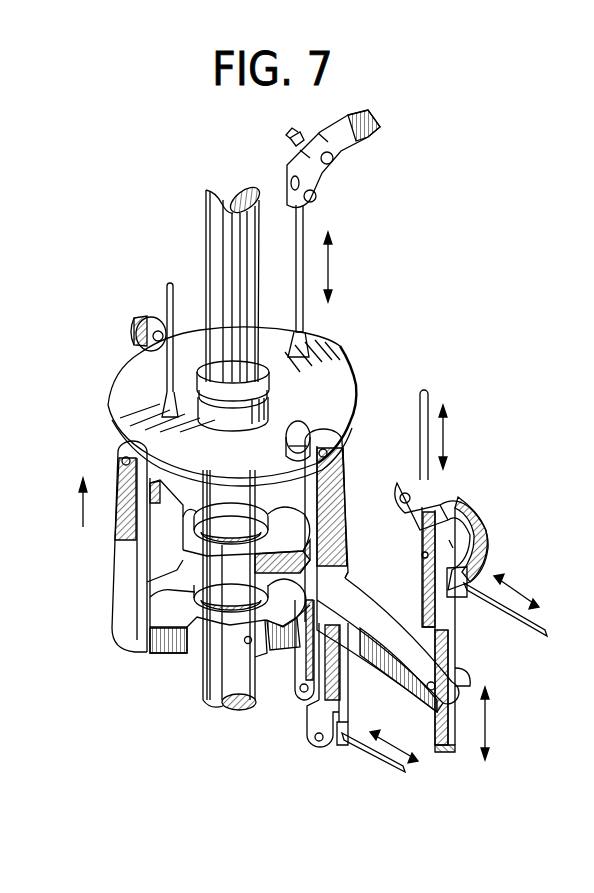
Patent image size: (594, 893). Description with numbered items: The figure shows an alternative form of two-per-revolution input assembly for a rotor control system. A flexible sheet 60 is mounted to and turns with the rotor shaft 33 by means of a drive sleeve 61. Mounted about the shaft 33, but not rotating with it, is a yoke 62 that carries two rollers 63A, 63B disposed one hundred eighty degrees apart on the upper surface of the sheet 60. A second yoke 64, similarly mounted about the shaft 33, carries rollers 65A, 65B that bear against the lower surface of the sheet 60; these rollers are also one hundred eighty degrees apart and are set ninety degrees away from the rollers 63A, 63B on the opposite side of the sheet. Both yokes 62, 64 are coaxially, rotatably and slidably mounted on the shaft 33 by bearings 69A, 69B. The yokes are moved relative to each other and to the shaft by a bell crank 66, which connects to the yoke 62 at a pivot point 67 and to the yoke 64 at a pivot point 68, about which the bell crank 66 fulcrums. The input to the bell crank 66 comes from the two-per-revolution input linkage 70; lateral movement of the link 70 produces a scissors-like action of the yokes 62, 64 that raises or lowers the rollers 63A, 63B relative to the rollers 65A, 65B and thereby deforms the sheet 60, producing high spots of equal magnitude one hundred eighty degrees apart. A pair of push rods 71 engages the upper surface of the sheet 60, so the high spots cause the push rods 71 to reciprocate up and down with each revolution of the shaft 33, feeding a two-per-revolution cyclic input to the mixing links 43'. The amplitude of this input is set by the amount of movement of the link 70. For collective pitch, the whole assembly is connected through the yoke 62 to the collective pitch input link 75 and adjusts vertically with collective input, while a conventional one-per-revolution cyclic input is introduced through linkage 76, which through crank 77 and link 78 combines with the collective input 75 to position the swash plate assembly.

The rotor shaft 33 is at (222, 232).
The mixing link 43' is at (365, 159).
The push rod 71 is at (305, 217).
The roller 63A is at (153, 316).
The flexible sheet 60 is at (335, 378).
The drive sleeve 61 is at (270, 386).
The roller 63B is at (330, 425).
The roller 65A is at (112, 445).
The roller 65B is at (340, 346).
The yoke 64 is at (147, 645).
The yoke 62 is at (216, 560).
The bearing 69A is at (228, 520).
The bearing 69B is at (212, 648).
The pivot point 68 is at (249, 690).
The pivot point 67 is at (303, 693).
The collective pitch input link 75 is at (455, 655).
The link 78 is at (420, 470).
The crank 77 is at (468, 515).
The cyclic pitch input linkage 76 is at (484, 582).
The bell crank 66 is at (345, 700).
The two/rev. input linkage 70 is at (392, 770).